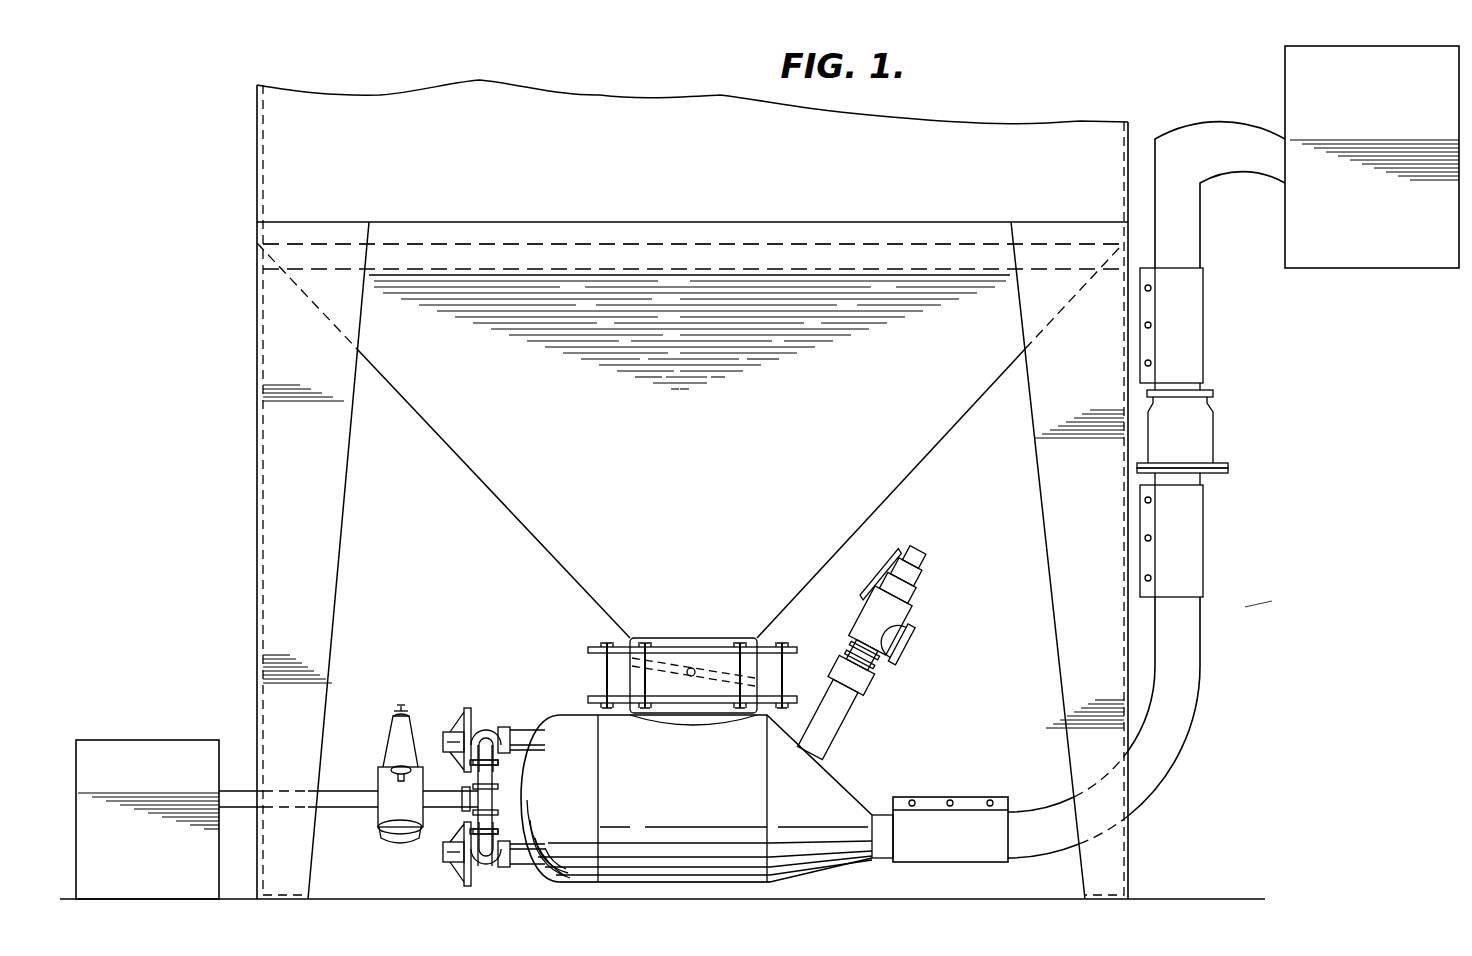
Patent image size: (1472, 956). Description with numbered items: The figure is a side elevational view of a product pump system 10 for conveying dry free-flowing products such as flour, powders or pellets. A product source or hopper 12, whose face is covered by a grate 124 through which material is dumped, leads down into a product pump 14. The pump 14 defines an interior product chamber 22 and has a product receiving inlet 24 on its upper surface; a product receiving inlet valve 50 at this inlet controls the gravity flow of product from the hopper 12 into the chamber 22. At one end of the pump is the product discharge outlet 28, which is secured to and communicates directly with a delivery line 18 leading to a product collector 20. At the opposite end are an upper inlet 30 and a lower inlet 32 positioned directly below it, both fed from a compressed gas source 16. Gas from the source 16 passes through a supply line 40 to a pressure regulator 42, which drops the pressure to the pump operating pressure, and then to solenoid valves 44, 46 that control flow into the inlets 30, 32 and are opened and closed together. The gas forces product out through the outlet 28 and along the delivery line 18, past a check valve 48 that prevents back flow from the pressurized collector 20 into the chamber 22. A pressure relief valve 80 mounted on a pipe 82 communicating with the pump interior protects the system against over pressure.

The product pump system 10 is at (1245, 607).
The hopper 12 is at (528, 480).
The product pump 14 is at (710, 884).
The compressed gas source 16 is at (163, 786).
The delivery line 18 is at (1174, 750).
The product collector 20 is at (1383, 228).
The product chamber 22 is at (652, 794).
The product receiving inlet 24 is at (694, 730).
The product discharge outlet 28 is at (886, 814).
The upper inlet 30 is at (510, 728).
The lower inlet 32 is at (516, 865).
The supply line 40 is at (343, 807).
The pressure regulator 42 is at (405, 727).
The solenoid valve 44 is at (470, 711).
The solenoid valve 46 is at (478, 866).
The check valve 48 is at (1200, 441).
The product receiving inlet valve 50 is at (722, 692).
The pressure relief valve 80 is at (905, 625).
The pipe 82 is at (829, 726).
The grate 124 is at (822, 262).